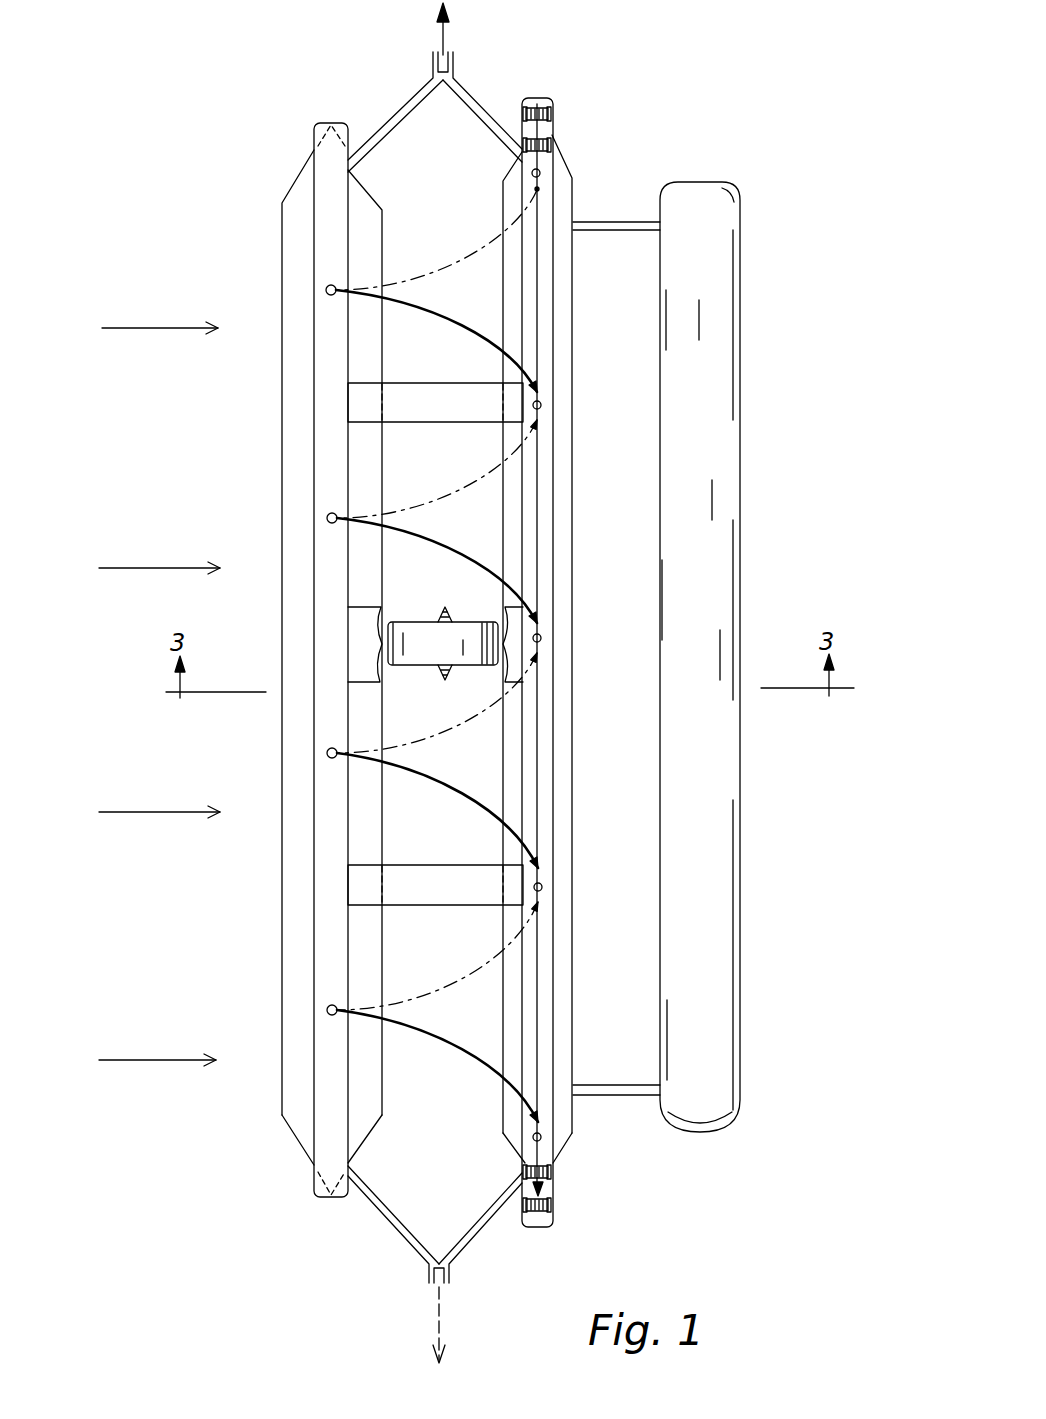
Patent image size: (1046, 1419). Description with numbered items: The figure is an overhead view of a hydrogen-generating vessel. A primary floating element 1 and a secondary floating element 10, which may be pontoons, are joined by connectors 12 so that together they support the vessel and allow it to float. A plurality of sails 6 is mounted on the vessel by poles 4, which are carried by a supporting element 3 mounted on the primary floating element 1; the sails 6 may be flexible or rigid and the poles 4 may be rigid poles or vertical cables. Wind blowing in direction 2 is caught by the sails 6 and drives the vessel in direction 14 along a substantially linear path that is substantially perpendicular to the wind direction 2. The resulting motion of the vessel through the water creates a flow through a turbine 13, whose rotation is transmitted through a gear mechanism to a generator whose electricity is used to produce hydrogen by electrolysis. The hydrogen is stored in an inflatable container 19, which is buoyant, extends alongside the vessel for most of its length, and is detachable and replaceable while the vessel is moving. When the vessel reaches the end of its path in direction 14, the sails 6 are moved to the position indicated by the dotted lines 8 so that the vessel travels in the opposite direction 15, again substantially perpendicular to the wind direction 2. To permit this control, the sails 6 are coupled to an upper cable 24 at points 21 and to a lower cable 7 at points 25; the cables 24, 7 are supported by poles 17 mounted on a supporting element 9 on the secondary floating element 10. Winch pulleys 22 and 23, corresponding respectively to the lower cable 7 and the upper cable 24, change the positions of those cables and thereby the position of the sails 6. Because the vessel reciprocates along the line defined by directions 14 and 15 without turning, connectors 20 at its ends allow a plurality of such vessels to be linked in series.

The primary floating element 1 is at (282, 202).
The wind direction 2 is at (125, 327).
The supporting element 3 is at (320, 378).
The poles 4 is at (326, 290).
The sails 6 is at (456, 324).
The lower cable 7 is at (585, 650).
The dotted lines 8 is at (461, 248).
The supporting element 9 is at (545, 200).
The secondary floating element 10 is at (568, 173).
The connectors 12 is at (438, 387).
The turbine 13 is at (430, 627).
The direction 14 is at (444, 32).
The direction 15 is at (440, 1301).
The poles 17 is at (541, 172).
The inflatable container 19 is at (710, 518).
The connectors 20 is at (477, 97).
The points 21 is at (586, 743).
The winch pulley 22 is at (553, 140).
The winch pulley 23 is at (553, 113).
The upper cable 24 is at (537, 222).
The points 25 is at (541, 390).